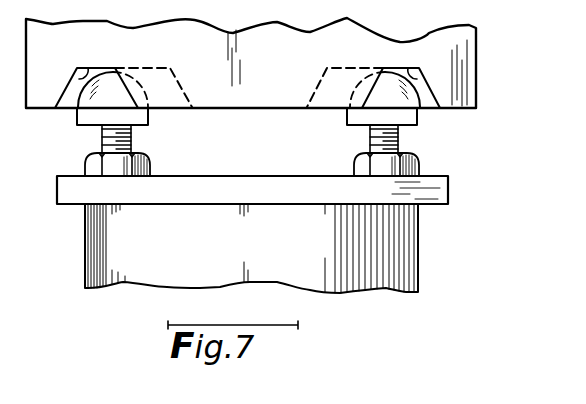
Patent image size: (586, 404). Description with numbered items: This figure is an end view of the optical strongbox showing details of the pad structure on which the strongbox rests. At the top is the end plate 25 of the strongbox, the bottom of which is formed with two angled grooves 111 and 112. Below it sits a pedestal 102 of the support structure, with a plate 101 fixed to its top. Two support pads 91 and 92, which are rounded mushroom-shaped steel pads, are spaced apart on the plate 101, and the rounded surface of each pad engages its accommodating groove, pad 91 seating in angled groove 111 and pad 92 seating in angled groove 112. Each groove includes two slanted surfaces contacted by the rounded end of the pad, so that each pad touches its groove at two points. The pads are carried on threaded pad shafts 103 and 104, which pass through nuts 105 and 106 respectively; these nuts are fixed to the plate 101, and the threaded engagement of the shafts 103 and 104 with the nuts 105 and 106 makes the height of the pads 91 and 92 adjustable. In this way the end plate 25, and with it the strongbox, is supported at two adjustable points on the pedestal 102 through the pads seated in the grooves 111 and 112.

The end plate 25 is at (479, 62).
The support pad 91 is at (108, 85).
The support pad 92 is at (392, 85).
The plate 101 is at (449, 190).
The pedestal 102 is at (419, 236).
The pad shaft 103 is at (102, 140).
The pad shaft 104 is at (369, 139).
The nut 105 is at (150, 158).
The nut 106 is at (419, 156).
The angled groove 111 is at (82, 78).
The angled groove 112 is at (423, 78).